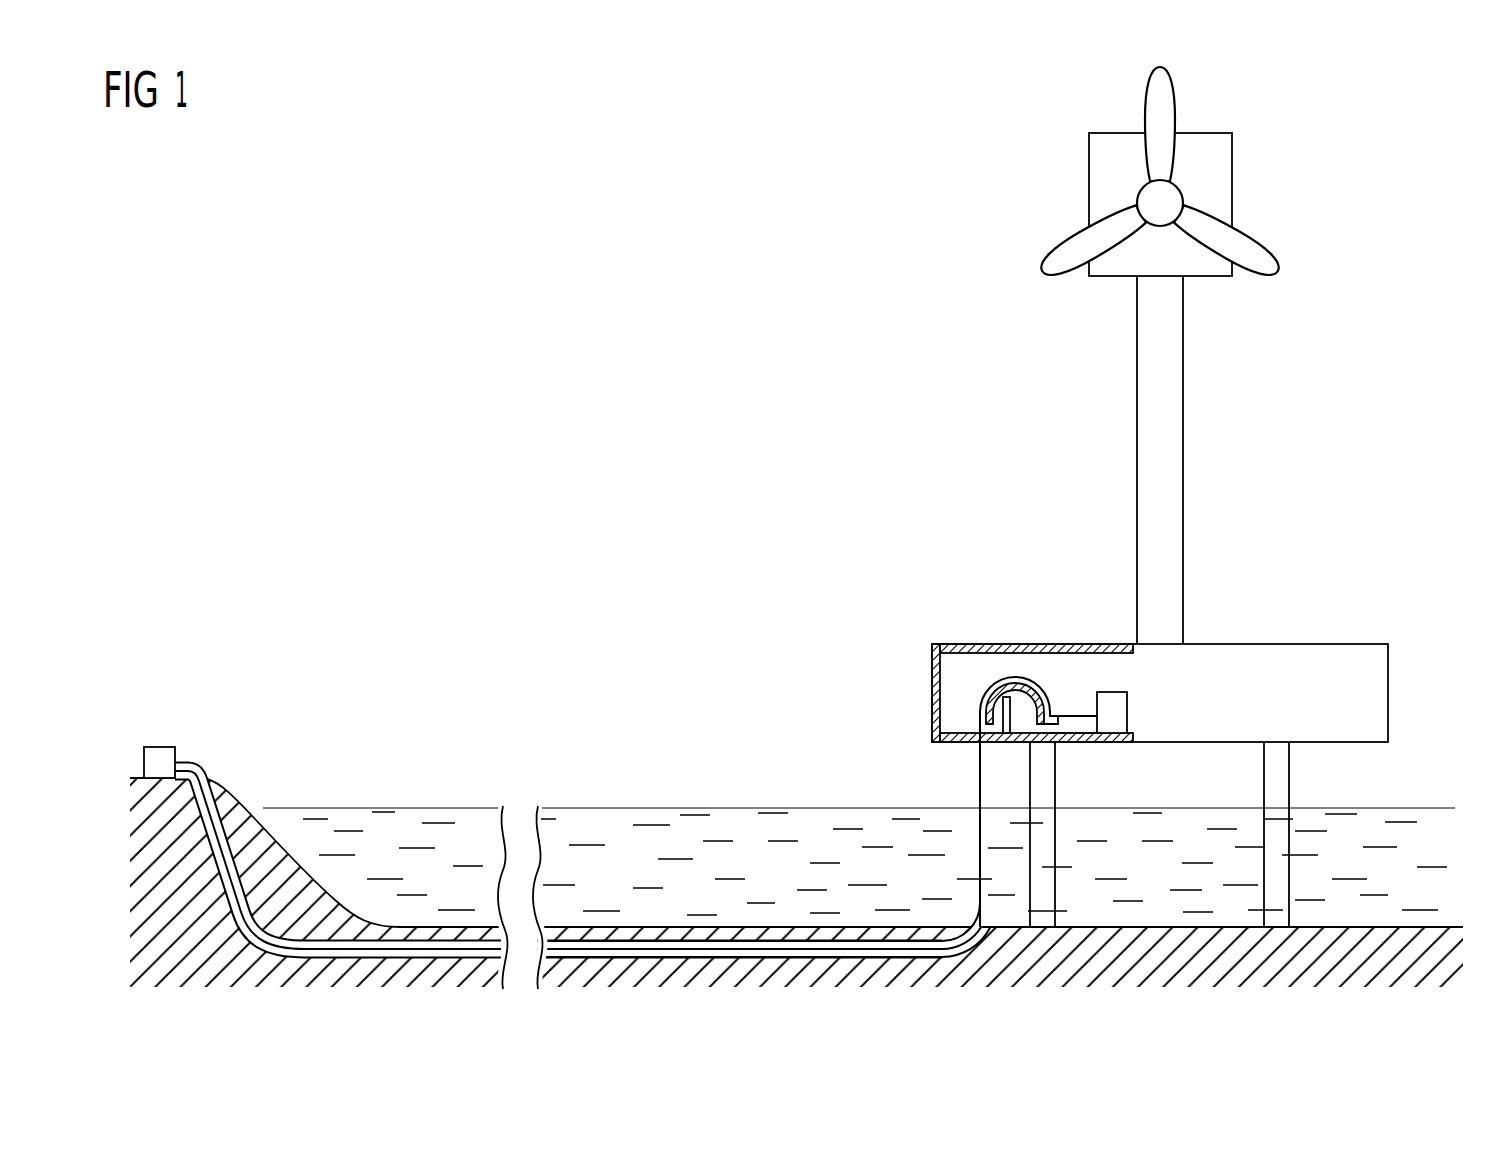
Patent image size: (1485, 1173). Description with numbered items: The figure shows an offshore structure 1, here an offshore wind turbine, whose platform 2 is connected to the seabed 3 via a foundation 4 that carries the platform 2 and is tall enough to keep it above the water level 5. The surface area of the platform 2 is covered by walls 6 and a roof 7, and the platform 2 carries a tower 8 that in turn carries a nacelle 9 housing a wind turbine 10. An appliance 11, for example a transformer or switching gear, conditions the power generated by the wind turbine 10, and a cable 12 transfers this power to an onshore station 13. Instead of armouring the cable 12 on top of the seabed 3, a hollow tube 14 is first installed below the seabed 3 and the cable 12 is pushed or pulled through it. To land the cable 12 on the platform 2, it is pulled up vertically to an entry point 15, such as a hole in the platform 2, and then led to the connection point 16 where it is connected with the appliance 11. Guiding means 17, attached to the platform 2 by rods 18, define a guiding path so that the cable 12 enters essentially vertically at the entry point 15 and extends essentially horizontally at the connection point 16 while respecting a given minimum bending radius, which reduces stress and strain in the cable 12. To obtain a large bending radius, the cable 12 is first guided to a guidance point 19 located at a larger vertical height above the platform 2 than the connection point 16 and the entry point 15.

The offshore structure 1 is at (1130, 497).
The platform 2 is at (1130, 744).
The seabed 3 is at (645, 927).
The foundation 4 is at (1293, 773).
The water level 5 is at (1418, 808).
The walls 6 is at (932, 688).
The roof 7 is at (962, 647).
The tower 8 is at (1170, 409).
The nacelle 9 is at (1218, 178).
The wind turbine 10 is at (1133, 188).
The appliance 11 is at (1108, 700).
The cable 12 is at (979, 780).
The onshore station 13 is at (160, 747).
The hollow tube 14 is at (768, 927).
The entry point 15 is at (974, 749).
The connection point 16 is at (1087, 707).
The guiding means 17 is at (1015, 722).
The rods 18 is at (1047, 730).
The guidance point 19 is at (1012, 677).